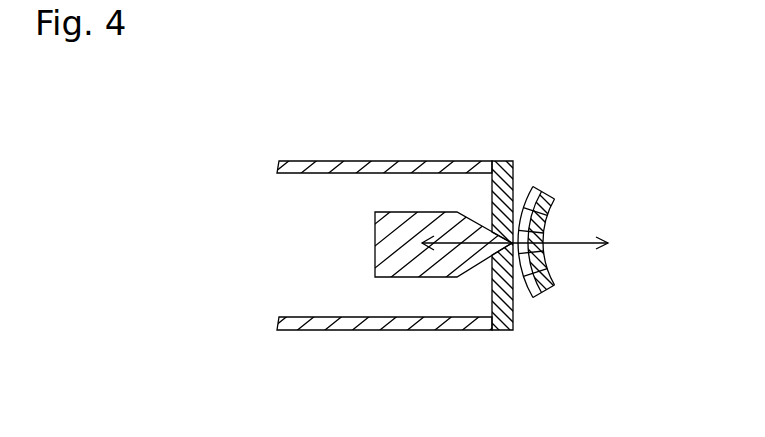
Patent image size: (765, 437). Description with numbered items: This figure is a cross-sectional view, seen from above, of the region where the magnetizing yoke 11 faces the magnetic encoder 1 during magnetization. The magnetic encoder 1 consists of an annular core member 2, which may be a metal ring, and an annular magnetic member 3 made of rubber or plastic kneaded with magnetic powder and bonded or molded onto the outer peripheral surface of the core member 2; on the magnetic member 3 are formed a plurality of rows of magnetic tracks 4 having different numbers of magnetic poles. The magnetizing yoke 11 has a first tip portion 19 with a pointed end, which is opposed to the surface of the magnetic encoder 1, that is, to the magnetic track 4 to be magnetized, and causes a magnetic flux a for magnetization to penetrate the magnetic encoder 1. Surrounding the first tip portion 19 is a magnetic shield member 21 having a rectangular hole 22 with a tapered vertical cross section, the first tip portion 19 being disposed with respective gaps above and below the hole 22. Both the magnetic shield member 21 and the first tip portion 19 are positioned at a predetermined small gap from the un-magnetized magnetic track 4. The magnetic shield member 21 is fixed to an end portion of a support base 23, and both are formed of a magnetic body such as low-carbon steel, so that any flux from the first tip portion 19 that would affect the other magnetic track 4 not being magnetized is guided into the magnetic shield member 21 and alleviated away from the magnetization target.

The magnetic encoder 1 is at (548, 177).
The core member 2 is at (556, 194).
The annular magnetic member 3 is at (535, 298).
The magnetic tracks 4 is at (528, 295).
The magnetizing yoke 11 is at (462, 207).
The first tip portion 19 is at (479, 222).
The magnetic shield member 21 is at (512, 160).
The rectangular hole 22 is at (502, 270).
The support base 23 is at (328, 164).